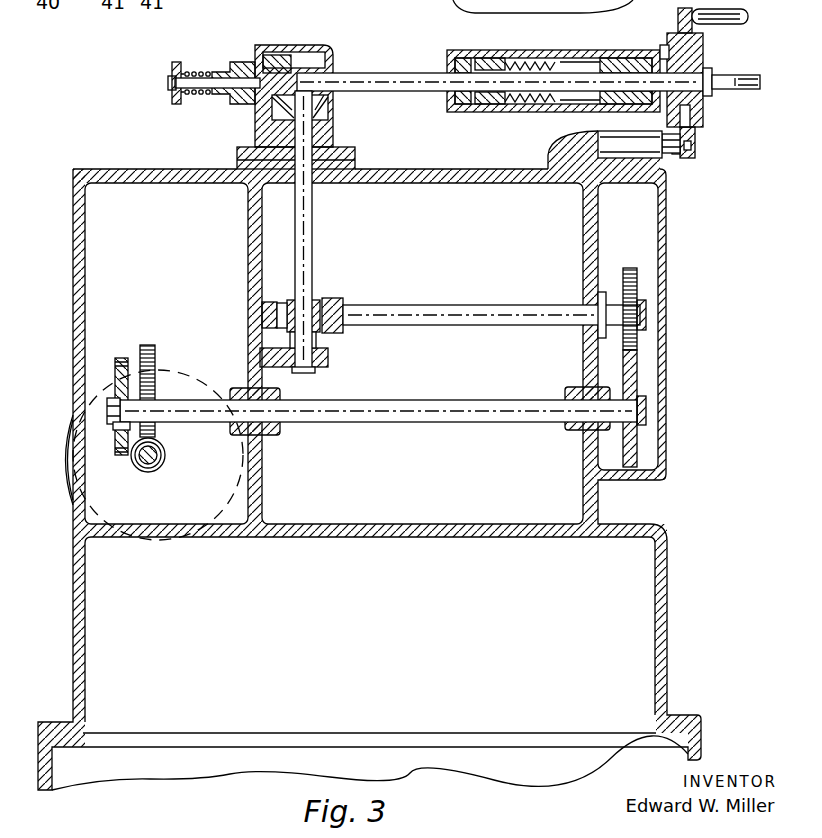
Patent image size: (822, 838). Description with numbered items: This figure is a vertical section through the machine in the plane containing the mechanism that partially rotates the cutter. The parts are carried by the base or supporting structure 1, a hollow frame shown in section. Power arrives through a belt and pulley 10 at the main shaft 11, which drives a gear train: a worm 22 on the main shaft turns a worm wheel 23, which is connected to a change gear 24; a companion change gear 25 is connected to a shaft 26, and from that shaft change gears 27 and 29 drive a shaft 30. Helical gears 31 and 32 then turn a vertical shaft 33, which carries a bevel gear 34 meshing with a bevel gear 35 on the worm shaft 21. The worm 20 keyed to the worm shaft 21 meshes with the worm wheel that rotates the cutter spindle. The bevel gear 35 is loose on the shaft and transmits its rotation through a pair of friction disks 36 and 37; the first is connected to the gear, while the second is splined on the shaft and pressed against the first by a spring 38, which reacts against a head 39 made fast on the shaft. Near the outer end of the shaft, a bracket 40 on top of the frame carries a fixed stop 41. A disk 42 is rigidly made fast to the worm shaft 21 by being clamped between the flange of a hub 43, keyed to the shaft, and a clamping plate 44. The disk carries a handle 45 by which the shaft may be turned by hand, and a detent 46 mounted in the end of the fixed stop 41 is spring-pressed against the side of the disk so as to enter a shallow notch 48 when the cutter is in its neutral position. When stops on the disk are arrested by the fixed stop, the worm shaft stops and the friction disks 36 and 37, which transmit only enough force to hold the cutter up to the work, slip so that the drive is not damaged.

The base or supporting structure 1 is at (585, 262).
The belt and pulley 10 is at (68, 481).
The main shaft 11 is at (154, 471).
The worm 20 is at (544, 105).
The worm shaft 21 is at (421, 86).
The worm on the main shaft 22 is at (166, 462).
The worm wheel 23 is at (156, 349).
The change gear 24 is at (120, 358).
The change gear 25 is at (118, 442).
The shaft 26 is at (440, 402).
The change gear 27 is at (633, 447).
The change gear 29 is at (632, 268).
The shaft 30 is at (474, 307).
The helical gear 31 is at (319, 282).
The helical gear 32 is at (340, 309).
The shaft 33 is at (308, 237).
The bevel gear 34 is at (328, 108).
The bevel gear 35 is at (288, 64).
The friction disk 36 is at (262, 52).
The friction disk 37 is at (238, 62).
The spring 38 is at (198, 73).
The head 39 is at (172, 64).
The bracket 40 is at (641, 148).
The fixed stop 41 is at (671, 154).
The disk 42 is at (697, 139).
The hub 43 is at (703, 44).
The clamping plate 44 is at (680, 118).
The handle 45 is at (736, 22).
The detent 46 is at (689, 157).
The shallow notch 48 is at (696, 147).